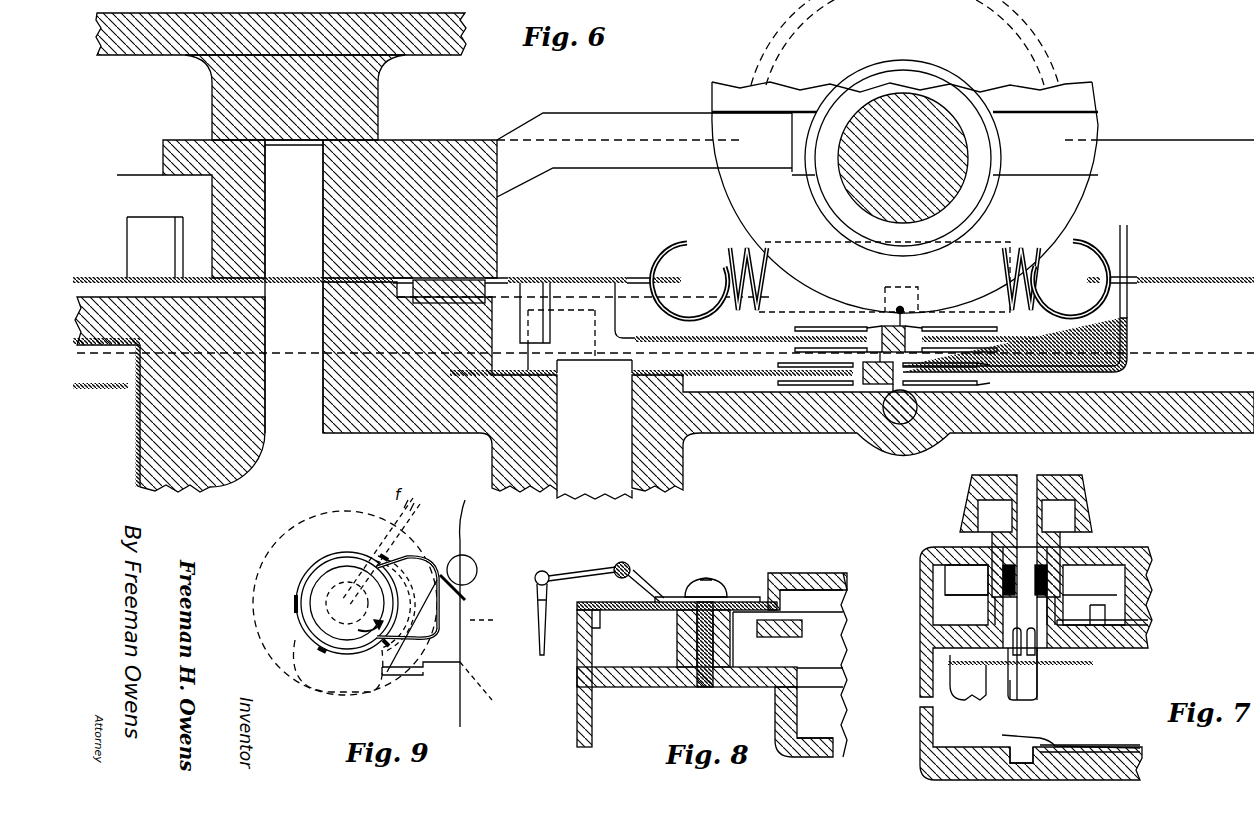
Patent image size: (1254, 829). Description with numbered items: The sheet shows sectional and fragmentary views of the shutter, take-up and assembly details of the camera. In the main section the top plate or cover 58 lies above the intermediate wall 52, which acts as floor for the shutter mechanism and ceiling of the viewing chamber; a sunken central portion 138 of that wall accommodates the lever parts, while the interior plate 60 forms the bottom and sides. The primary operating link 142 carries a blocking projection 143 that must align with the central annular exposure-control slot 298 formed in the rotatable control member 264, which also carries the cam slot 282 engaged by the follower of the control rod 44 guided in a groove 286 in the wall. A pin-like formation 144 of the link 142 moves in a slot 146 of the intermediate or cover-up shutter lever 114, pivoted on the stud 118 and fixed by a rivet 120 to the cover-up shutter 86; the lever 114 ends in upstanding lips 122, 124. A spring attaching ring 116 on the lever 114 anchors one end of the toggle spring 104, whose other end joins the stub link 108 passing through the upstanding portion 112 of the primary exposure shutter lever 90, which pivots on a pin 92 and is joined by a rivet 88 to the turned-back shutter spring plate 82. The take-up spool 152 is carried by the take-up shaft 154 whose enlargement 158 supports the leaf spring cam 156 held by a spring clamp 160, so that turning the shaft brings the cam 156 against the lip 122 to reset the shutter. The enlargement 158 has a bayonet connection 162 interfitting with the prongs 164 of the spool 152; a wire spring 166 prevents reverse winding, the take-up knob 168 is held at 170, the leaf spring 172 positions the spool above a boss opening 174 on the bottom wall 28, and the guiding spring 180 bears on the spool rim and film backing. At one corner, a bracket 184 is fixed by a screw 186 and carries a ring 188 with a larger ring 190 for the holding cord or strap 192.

In FIG. 6, the top plate 58 is at (428, 52).
In FIG. 6, the primary operating link 142 is at (416, 147).
In FIG. 6, the blocking projection 143 is at (563, 122).
In FIG. 6, the control member 264 is at (1082, 98).
In FIG. 6, the exposure-control slot 298 is at (1090, 130).
In FIG. 6, the cam slot 282 is at (1055, 188).
In FIG. 6, the upstanding lip 122 is at (155, 230).
In FIG. 7, the upstanding lip 122 is at (1150, 608).
In FIG. 9, the upstanding lip 122 is at (471, 583).
In FIG. 6, the toggle spring 104 is at (730, 244).
In FIG. 6, the spring attaching ring 116 is at (700, 252).
In FIG. 6, the slot 146 is at (500, 279).
In FIG. 6, the intermediate or cover-up shutter lever 114 is at (568, 279).
In FIG. 7, the intermediate or cover-up shutter lever 114 is at (1150, 624).
In FIG. 6, the stub link 108 is at (1160, 278).
In FIG. 6, the pin-like formation 144 is at (434, 300).
In FIG. 6, the rivet 120 is at (895, 336).
In FIG. 6, the cover-up shutter 86 is at (992, 341).
In FIG. 6, the upstanding portion 112 is at (1130, 338).
In FIG. 6, the central portion 138 is at (1130, 394).
In FIG. 8, the central portion 138 is at (830, 743).
In FIG. 6, the take-up spool 152 is at (127, 389).
In FIG. 7, the take-up spool 152 is at (1095, 666).
In FIG. 9, the take-up spool 152 is at (366, 533).
In FIG. 6, the interior plate 60 is at (137, 460).
In FIG. 6, the stud 118 is at (278, 424).
In FIG. 6, the primary exposure shutter lever 90 is at (735, 378).
In FIG. 6, the rivet 88 is at (873, 378).
In FIG. 6, the groove 286 is at (893, 390).
In FIG. 6, the control rod 44 is at (893, 402).
In FIG. 6, the shutter spring plate 82 is at (968, 370).
In FIG. 6, the pin 92 is at (605, 485).
In FIG. 7, the knob holding point 170 is at (1028, 480).
In FIG. 7, the take-up knob 168 is at (1080, 488).
In FIG. 7, the wire spring 166 is at (1003, 578).
In FIG. 7, the leaf spring cam 156 is at (1000, 611).
In FIG. 9, the leaf spring cam 156 is at (418, 559).
In FIG. 7, the enlargement 158 is at (1030, 611).
In FIG. 9, the enlargement 158 is at (338, 576).
In FIG. 7, the supporting, tensioning and guiding spring 180 is at (960, 678).
In FIG. 7, the bayonet connection 162 is at (1038, 668).
In FIG. 7, the take-up shaft 154 is at (1030, 692).
In FIG. 9, the take-up shaft 154 is at (347, 620).
In FIG. 7, the opening 174 is at (1010, 758).
In FIG. 7, the prongs 164 is at (1010, 682).
In FIG. 7, the leaf spring 172 is at (1055, 747).
In FIG. 7, the bottom wall 28 is at (1140, 773).
In FIG. 8, the holding cord or strap 192 is at (542, 570).
In FIG. 8, the larger ring 190 is at (585, 575).
In FIG. 8, the ring 188 is at (630, 566).
In FIG. 8, the bracket 184 is at (672, 600).
In FIG. 8, the screw 186 is at (715, 590).
In FIG. 8, the intermediate wall 52 is at (778, 710).
In FIG. 9, the spring clamp 160 is at (305, 586).
In FIG. 9, the upstanding lip 124 is at (408, 680).